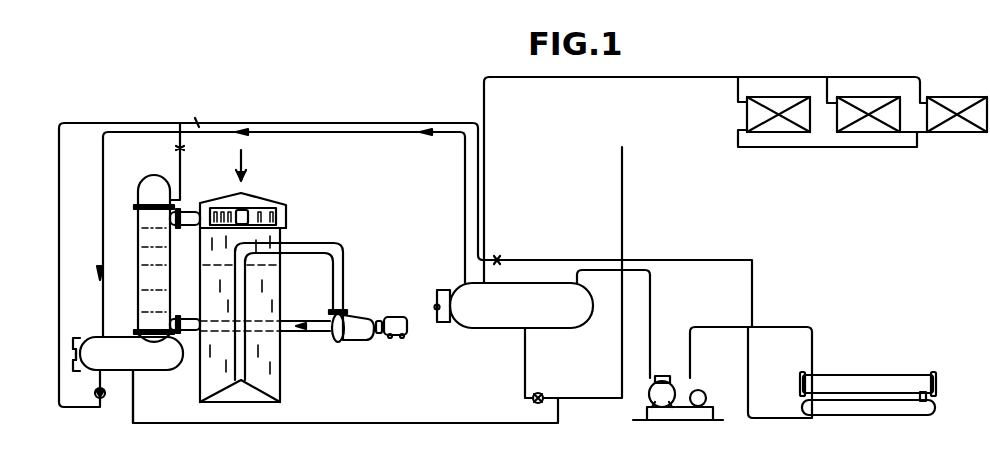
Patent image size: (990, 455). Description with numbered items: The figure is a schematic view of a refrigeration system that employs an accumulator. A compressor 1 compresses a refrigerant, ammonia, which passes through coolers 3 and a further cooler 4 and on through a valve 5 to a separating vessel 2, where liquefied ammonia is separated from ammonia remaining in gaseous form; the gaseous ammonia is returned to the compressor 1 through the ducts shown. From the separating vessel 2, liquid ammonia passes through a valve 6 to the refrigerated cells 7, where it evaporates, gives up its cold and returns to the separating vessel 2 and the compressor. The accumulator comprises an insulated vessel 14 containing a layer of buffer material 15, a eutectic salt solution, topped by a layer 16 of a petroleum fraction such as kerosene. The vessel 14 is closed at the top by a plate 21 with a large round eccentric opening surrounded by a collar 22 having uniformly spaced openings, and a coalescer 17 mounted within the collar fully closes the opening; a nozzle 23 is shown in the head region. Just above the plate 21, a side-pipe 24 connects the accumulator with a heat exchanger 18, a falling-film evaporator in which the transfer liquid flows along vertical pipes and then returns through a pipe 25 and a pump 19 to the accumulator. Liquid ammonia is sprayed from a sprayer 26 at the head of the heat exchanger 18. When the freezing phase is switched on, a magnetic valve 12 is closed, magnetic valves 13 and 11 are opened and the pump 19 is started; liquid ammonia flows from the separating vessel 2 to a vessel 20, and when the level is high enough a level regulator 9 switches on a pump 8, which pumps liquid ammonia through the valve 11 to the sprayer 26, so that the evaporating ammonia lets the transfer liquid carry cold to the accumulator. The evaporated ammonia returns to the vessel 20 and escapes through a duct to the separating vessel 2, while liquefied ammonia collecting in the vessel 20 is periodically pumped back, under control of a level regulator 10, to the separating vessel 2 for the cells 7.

The compressor 1 is at (683, 392).
The separating vessel 2 is at (514, 305).
The coolers 3 is at (852, 384).
The return pipe 4 is at (865, 408).
The valve 5 is at (496, 261).
The valve 6 is at (541, 392).
The refrigerated cells 7 is at (968, 126).
The pump 8 is at (94, 386).
The level regulator 9 is at (67, 374).
The level regulator 10 is at (75, 346).
The magnetic valve 11 is at (184, 146).
The magnetic valve 12 is at (198, 123).
The magnetic valve 13 is at (132, 377).
The vessel 14 is at (282, 290).
The buffer material 15 is at (268, 280).
The layer of petroleum fraction 16 is at (276, 235).
The coalescer 17 is at (241, 218).
The heat exchanger 18 is at (145, 258).
The pump 19 is at (355, 336).
The vessel 20 is at (164, 362).
The plate 21 is at (284, 229).
The collar 22 is at (284, 210).
The nozzle 23 is at (254, 216).
The side-pipe 24 is at (184, 215).
The pipe 25 is at (295, 333).
The sprayer 26 is at (152, 195).